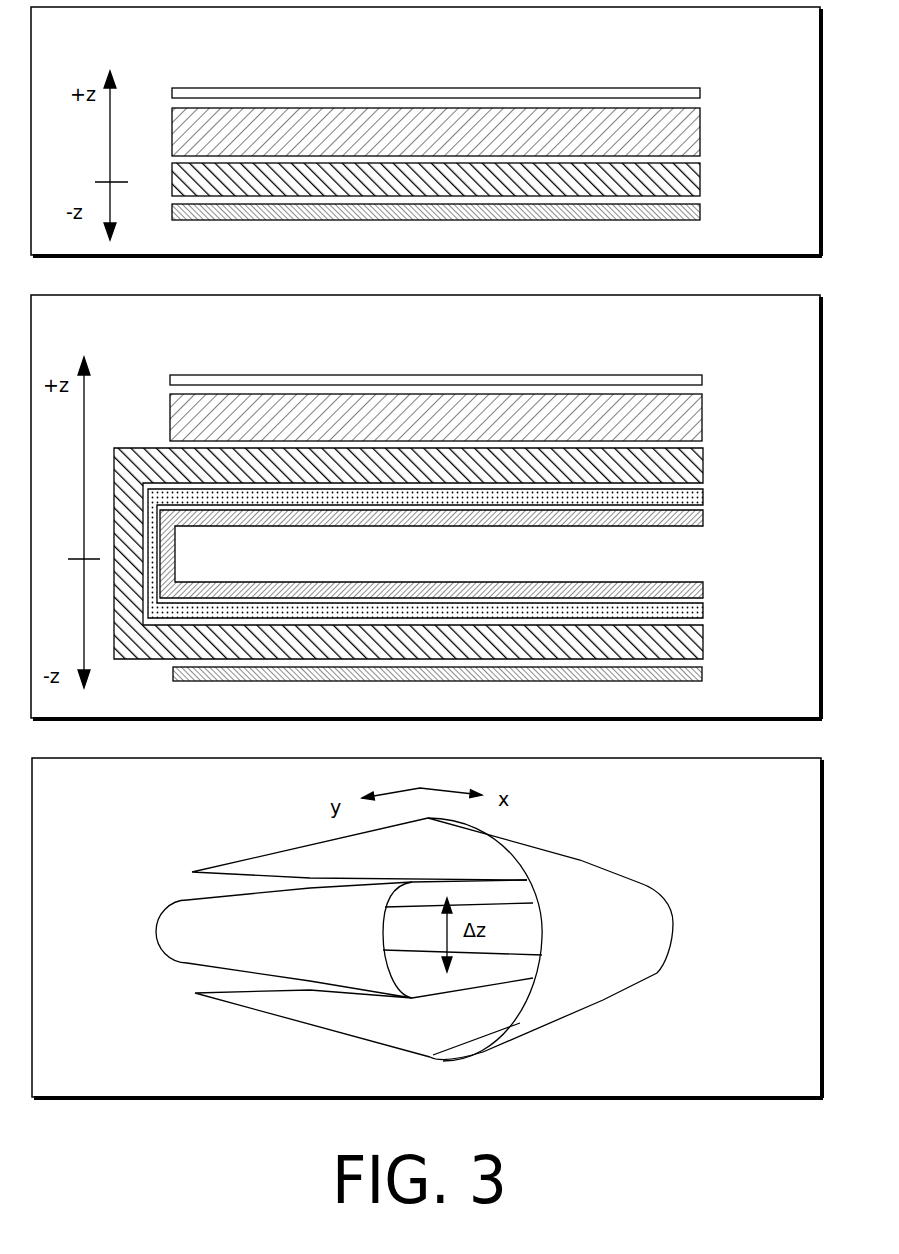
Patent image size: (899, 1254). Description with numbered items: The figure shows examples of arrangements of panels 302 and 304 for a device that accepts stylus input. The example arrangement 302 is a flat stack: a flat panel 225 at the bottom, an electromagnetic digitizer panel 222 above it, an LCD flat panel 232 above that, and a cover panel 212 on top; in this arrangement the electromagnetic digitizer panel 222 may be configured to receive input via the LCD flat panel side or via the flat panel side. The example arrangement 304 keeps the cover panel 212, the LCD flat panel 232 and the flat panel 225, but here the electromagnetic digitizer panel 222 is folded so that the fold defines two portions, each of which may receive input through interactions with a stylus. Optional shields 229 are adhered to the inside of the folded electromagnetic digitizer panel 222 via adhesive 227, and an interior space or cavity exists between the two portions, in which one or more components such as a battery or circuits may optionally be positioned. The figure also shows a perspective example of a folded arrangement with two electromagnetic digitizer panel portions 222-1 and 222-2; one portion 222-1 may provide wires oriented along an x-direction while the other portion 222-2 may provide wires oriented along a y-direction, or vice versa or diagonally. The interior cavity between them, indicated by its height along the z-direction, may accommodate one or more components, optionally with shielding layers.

The example arrangement 302 is at (600, 51).
The example arrangement 304 is at (560, 341).
The cover panel 212 is at (700, 93).
The LCD flat panel 232 is at (700, 133).
The electromagnetic digitizer panel 222 is at (700, 178).
The flat panel 225 is at (700, 210).
The adhesive 227 is at (702, 496).
The shield 229 is at (702, 517).
The electromagnetic digitizer panel portion 222-1 is at (157, 922).
The electromagnetic digitizer panel portion 222-2 is at (673, 923).